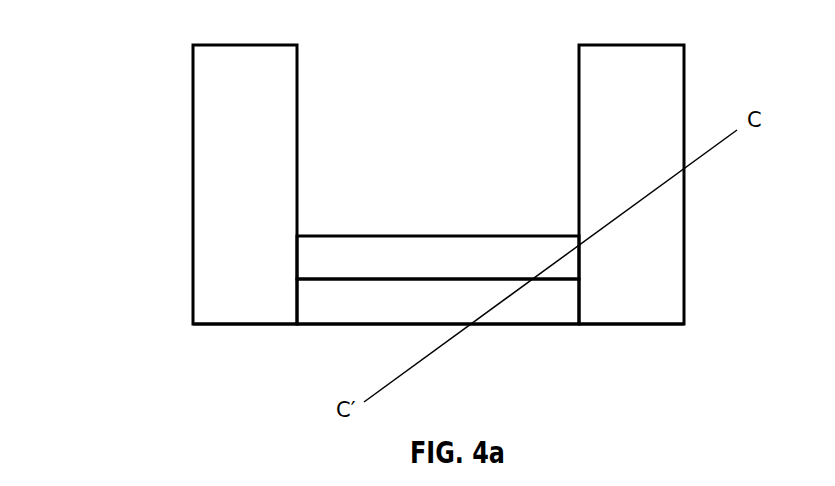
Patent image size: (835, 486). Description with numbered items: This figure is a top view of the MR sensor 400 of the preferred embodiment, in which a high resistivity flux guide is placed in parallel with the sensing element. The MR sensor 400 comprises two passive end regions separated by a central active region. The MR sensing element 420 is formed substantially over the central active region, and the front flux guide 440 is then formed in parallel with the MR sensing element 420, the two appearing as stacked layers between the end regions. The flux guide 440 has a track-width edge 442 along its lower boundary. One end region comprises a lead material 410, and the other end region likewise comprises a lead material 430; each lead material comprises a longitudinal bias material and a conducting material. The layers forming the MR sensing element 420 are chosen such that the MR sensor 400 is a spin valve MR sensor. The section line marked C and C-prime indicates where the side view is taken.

The MR sensor 400 is at (125, 375).
The lead material 410 is at (220, 90).
The MR sensing element 420 is at (500, 257).
The lead material 430 is at (648, 109).
The front flux guide 440 is at (533, 308).
The track-width edge 442 is at (520, 324).